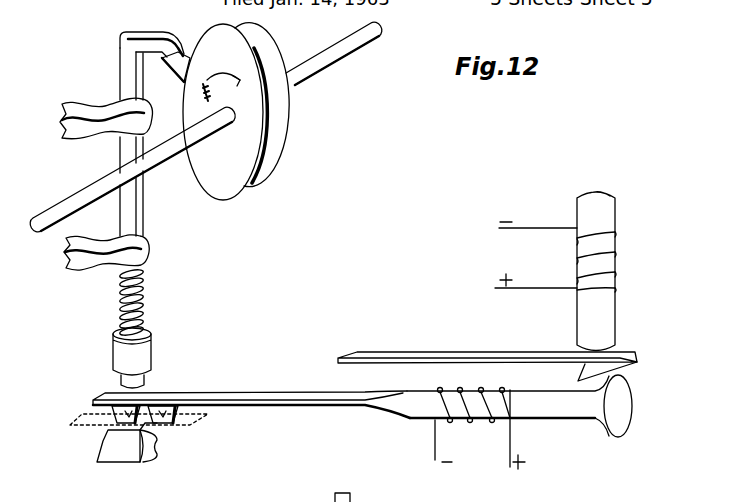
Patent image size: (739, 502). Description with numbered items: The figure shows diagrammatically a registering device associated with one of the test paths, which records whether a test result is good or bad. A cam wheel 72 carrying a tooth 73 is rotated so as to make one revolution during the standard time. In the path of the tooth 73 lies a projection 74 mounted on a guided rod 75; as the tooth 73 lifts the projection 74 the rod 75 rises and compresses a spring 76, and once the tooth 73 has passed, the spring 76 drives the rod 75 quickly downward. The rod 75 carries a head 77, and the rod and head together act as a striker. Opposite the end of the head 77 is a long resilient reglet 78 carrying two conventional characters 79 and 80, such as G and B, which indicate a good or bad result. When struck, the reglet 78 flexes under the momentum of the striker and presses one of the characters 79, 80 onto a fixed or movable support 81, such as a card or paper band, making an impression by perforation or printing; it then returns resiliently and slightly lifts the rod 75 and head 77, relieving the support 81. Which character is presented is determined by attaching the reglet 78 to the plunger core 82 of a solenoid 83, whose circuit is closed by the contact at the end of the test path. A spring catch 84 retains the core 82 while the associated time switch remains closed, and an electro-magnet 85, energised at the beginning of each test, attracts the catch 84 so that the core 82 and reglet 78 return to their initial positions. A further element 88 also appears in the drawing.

The cam wheel 72 is at (236, 111).
The tooth 73 is at (182, 60).
The projection 74 is at (162, 42).
The rod 75 is at (125, 75).
The spring 76 is at (141, 295).
The head 77 is at (148, 354).
The resilient reglet 78 is at (253, 394).
The character 79 is at (123, 413).
The character 80 is at (175, 423).
The support 81 is at (193, 420).
The plunger core 82 is at (543, 420).
The solenoid 83 is at (493, 422).
The spring catch 84 is at (493, 358).
The electro-magnet 85 is at (578, 260).
The element 88 is at (361, 494).